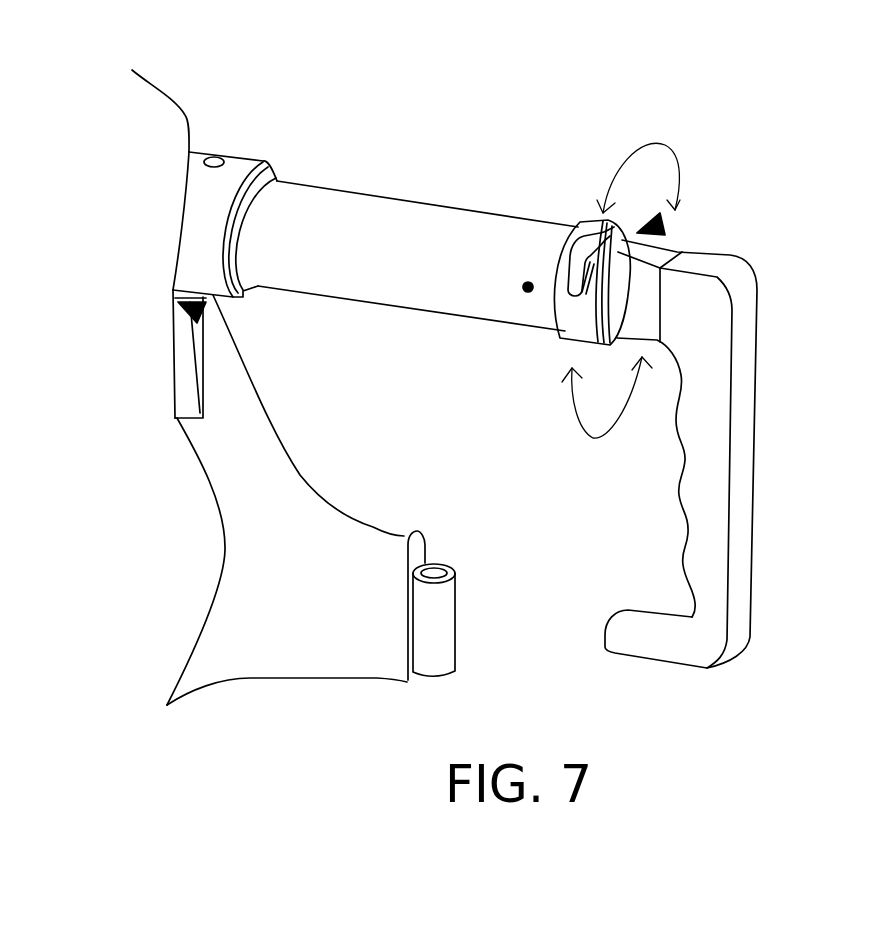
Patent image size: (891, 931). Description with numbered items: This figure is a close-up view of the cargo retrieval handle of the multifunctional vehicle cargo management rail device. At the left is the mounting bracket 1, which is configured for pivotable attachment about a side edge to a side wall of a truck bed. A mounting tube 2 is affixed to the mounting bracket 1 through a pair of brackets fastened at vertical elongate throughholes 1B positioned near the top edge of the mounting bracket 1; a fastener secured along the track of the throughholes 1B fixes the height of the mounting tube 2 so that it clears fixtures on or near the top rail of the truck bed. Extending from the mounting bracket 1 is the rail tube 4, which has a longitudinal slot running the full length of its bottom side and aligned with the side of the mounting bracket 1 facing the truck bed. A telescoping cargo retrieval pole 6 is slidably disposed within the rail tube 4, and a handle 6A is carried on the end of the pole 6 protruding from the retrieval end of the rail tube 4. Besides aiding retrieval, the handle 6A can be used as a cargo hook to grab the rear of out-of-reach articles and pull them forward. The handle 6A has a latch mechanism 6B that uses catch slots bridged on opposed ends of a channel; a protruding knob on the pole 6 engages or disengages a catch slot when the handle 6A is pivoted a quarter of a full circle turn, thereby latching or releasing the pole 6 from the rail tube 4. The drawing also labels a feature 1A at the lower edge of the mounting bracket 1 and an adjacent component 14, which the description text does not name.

The mounting bracket 1 is at (303, 584).
The tab portion of body 1A is at (403, 534).
The vertical elongate throughholes 1B is at (200, 317).
The mounting tube 2 is at (230, 163).
The rail tube 4 is at (425, 222).
The telescoping cargo retrieval pole 6 is at (663, 230).
The handle 6A is at (708, 330).
The latch mechanism 6B is at (578, 243).
The cylindrical boss 14 is at (419, 540).